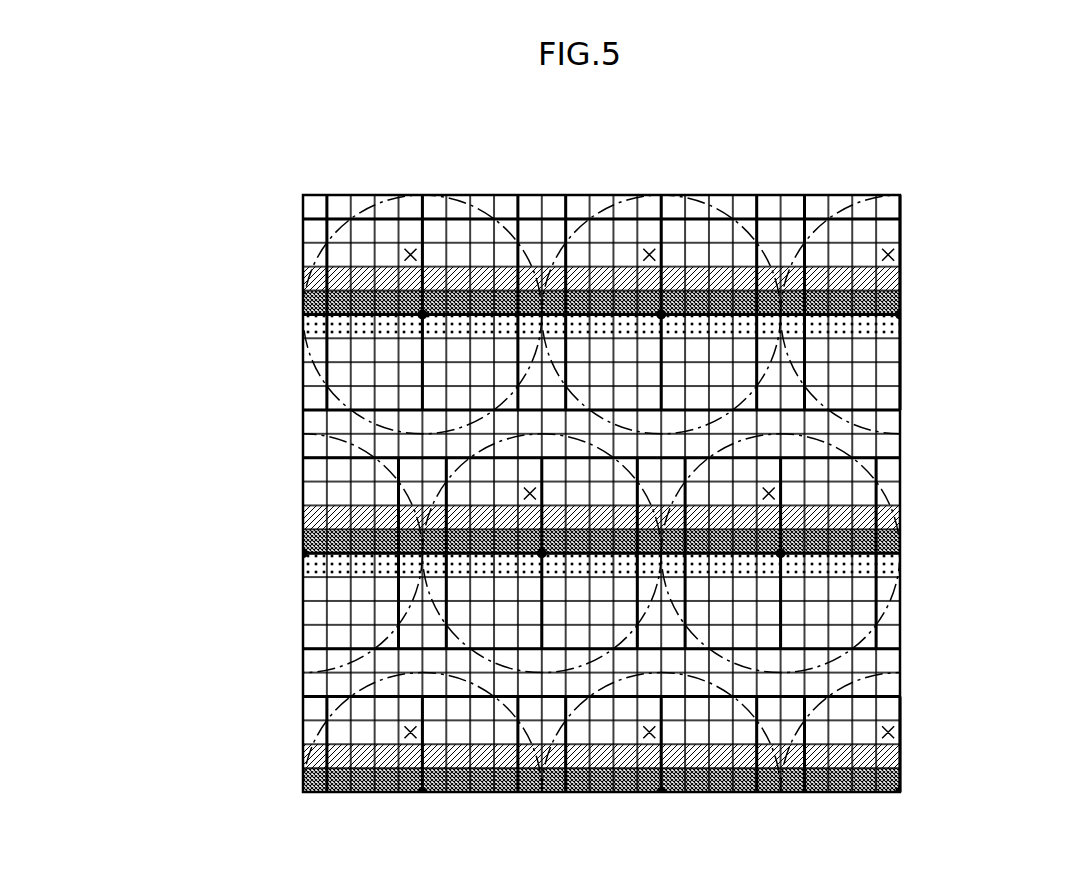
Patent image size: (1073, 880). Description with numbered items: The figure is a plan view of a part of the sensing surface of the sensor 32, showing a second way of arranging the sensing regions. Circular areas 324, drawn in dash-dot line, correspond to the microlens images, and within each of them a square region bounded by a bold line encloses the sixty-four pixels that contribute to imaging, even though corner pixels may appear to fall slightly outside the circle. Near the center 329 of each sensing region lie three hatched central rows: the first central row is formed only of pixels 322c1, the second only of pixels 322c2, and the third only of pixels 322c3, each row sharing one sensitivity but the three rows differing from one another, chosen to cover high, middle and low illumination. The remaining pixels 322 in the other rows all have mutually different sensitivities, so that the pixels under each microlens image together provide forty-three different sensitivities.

The sensor 32 is at (855, 168).
The pixels 322 is at (412, 247).
The first central row pixels 322c1 is at (750, 300).
The second central row pixels 322c2 is at (750, 270).
The third central row pixels 322c3 is at (750, 326).
The circular area 324 is at (339, 228).
The center 329 is at (661, 314).